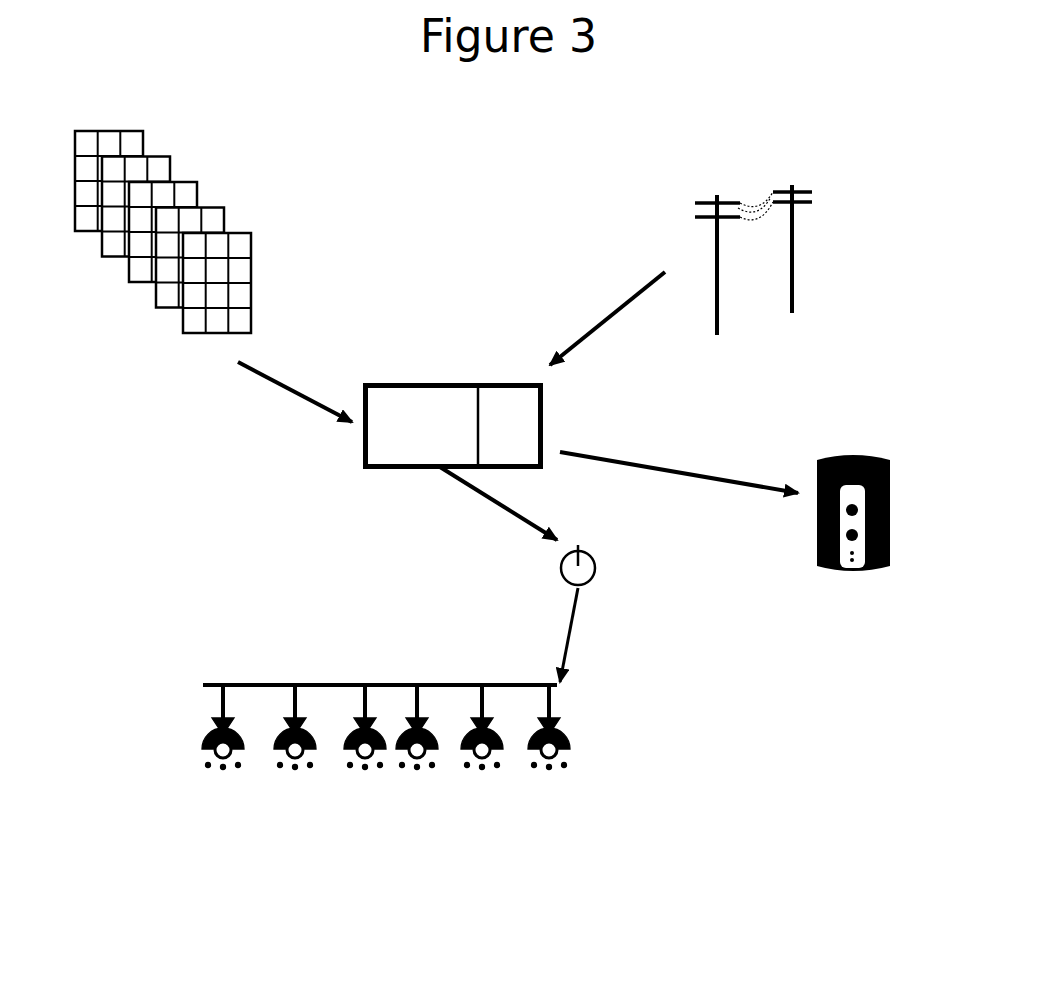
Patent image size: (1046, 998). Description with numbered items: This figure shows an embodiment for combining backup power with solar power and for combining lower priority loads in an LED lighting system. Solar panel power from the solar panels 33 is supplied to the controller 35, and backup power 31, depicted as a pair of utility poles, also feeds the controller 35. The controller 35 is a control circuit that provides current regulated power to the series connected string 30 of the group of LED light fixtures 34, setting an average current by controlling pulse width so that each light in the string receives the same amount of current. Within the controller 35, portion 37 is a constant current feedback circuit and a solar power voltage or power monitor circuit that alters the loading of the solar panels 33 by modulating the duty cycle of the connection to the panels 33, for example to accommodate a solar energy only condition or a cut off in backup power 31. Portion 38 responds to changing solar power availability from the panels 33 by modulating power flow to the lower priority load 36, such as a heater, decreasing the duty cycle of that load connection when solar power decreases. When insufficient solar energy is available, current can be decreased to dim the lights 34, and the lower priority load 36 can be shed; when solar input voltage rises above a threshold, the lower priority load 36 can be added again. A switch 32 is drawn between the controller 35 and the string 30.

The series connected string 30 is at (195, 680).
The backup power 31 is at (802, 260).
The switch 32 is at (600, 572).
The solar panels 33 is at (125, 323).
The LED light fixtures 34 is at (573, 787).
The controller 35 is at (453, 361).
The lower priority load 36 is at (867, 600).
The constant current feedback circuit 37 is at (422, 425).
The portion 38 is at (504, 425).